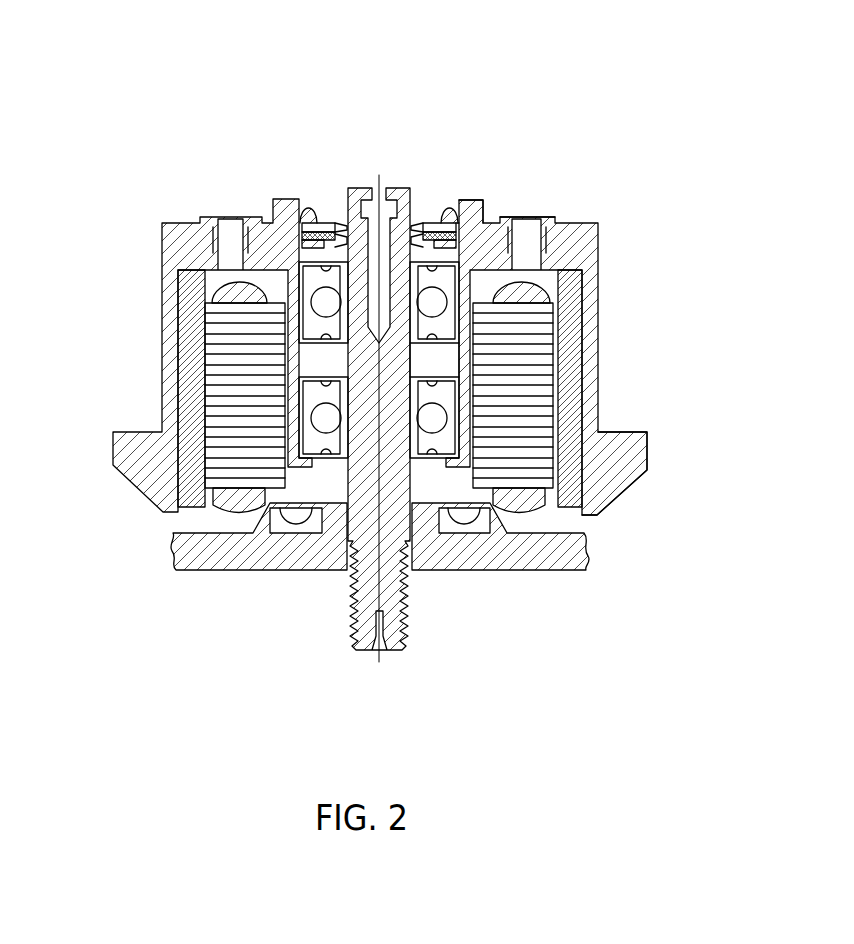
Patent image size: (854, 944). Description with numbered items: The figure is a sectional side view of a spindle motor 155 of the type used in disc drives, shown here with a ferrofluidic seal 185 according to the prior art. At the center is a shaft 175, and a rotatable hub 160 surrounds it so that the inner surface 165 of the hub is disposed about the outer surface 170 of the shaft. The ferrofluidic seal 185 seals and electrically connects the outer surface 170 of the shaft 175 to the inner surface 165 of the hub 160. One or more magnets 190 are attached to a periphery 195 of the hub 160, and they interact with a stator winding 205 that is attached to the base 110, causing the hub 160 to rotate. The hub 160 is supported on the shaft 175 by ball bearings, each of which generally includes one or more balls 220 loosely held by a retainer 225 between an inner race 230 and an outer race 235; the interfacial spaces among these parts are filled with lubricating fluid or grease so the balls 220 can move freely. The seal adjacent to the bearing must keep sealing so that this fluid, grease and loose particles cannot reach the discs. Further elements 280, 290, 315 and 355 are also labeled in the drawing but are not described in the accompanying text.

The base 110 is at (482, 570).
The spindle motor 155 is at (657, 152).
The rotatable hub 160 is at (477, 200).
The inner surface 165 is at (447, 378).
The outer surface 170 is at (445, 358).
The shaft 175 is at (397, 192).
The ferrofluidic seal 185 is at (433, 187).
The magnets 190 is at (582, 380).
The periphery 195 is at (598, 420).
The stator winding 205 is at (555, 345).
The balls 220 is at (433, 303).
The retainer 225 is at (440, 278).
The inner race 230 is at (313, 462).
The outer race 235 is at (433, 418).
The seal 280 is at (335, 210).
The clearance 290 is at (418, 194).
The upper bearing 315 is at (337, 343).
The seal ring 355 is at (309, 204).